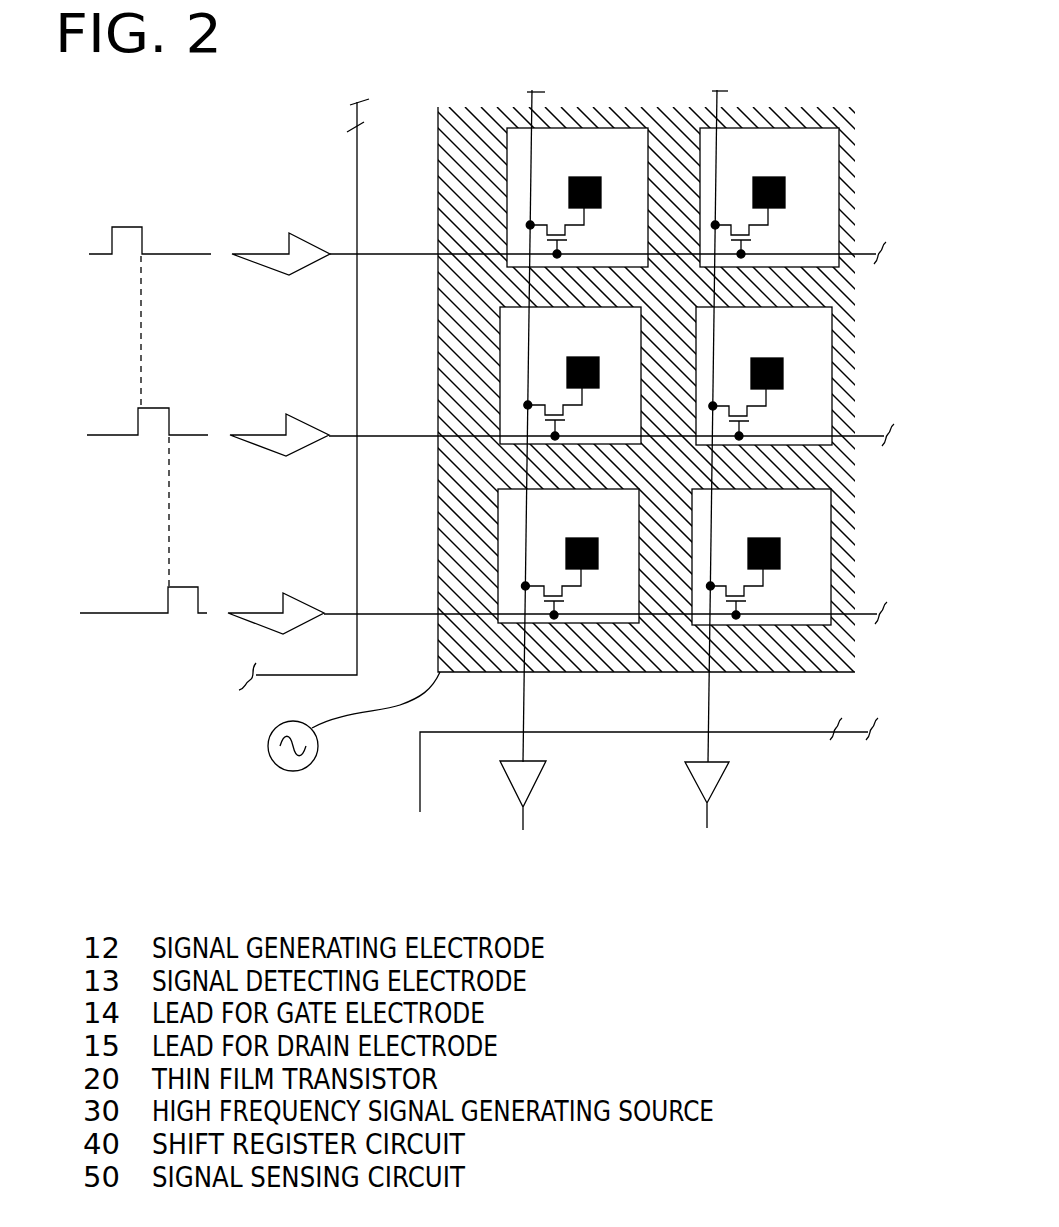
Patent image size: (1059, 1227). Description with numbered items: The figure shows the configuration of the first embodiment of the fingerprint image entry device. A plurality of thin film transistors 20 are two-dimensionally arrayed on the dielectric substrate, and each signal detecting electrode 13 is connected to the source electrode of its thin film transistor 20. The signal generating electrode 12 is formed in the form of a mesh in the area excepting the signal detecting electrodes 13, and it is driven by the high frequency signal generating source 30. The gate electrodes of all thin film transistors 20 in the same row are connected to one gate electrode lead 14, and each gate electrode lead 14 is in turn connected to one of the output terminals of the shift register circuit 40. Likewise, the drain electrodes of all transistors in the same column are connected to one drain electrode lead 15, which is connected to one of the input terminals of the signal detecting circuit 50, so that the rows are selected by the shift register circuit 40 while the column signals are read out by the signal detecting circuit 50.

The signal generating electrode 12 is at (668, 110).
The signal detecting electrode 13 is at (780, 176).
The gate electrode lead 14 is at (420, 254).
The drain electrode lead 15 is at (716, 687).
The thin film transistor 20 is at (762, 239).
The high frequency signal generating source 30 is at (308, 765).
The shift register circuit 40 is at (358, 121).
The signal detecting circuit 50 is at (843, 723).